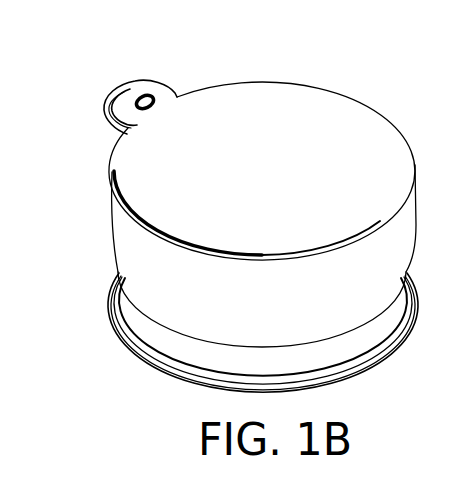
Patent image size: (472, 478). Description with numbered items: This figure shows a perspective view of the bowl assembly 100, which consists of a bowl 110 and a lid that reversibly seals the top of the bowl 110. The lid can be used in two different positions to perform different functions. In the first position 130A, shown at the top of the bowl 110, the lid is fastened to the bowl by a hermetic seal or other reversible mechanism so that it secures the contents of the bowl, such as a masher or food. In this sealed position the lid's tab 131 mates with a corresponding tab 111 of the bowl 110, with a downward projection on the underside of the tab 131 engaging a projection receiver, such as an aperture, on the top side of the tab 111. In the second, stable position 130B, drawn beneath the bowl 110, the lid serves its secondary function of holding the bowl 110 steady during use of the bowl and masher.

The bowl assembly 100 is at (82, 169).
The bowl 110 is at (123, 233).
The tab 111 is at (108, 95).
The lid position 130A is at (253, 82).
The stable position 130B is at (143, 353).
The tab 131 is at (140, 80).